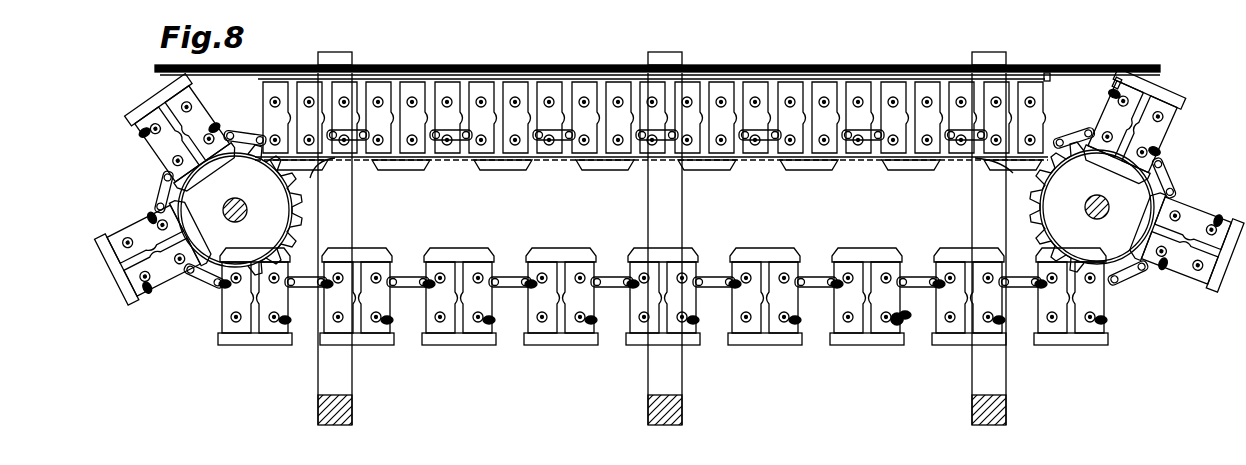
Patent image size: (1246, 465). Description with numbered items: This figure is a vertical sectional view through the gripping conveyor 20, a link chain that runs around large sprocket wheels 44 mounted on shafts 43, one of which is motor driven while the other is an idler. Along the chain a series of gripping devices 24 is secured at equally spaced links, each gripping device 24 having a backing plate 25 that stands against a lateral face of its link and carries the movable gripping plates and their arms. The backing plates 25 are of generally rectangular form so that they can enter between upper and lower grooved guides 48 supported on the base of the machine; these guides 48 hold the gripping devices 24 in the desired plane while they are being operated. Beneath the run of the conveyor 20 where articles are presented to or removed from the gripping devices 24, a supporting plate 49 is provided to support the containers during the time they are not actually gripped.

The gripping conveyor 20 is at (1163, 173).
The gripping device 24 is at (904, 322).
The backing plate 25 is at (839, 338).
The shaft 43 is at (247, 193).
The sprocket wheel 44 is at (281, 224).
The grooved guide 48 is at (1118, 85).
The supporting plate 49 is at (754, 163).